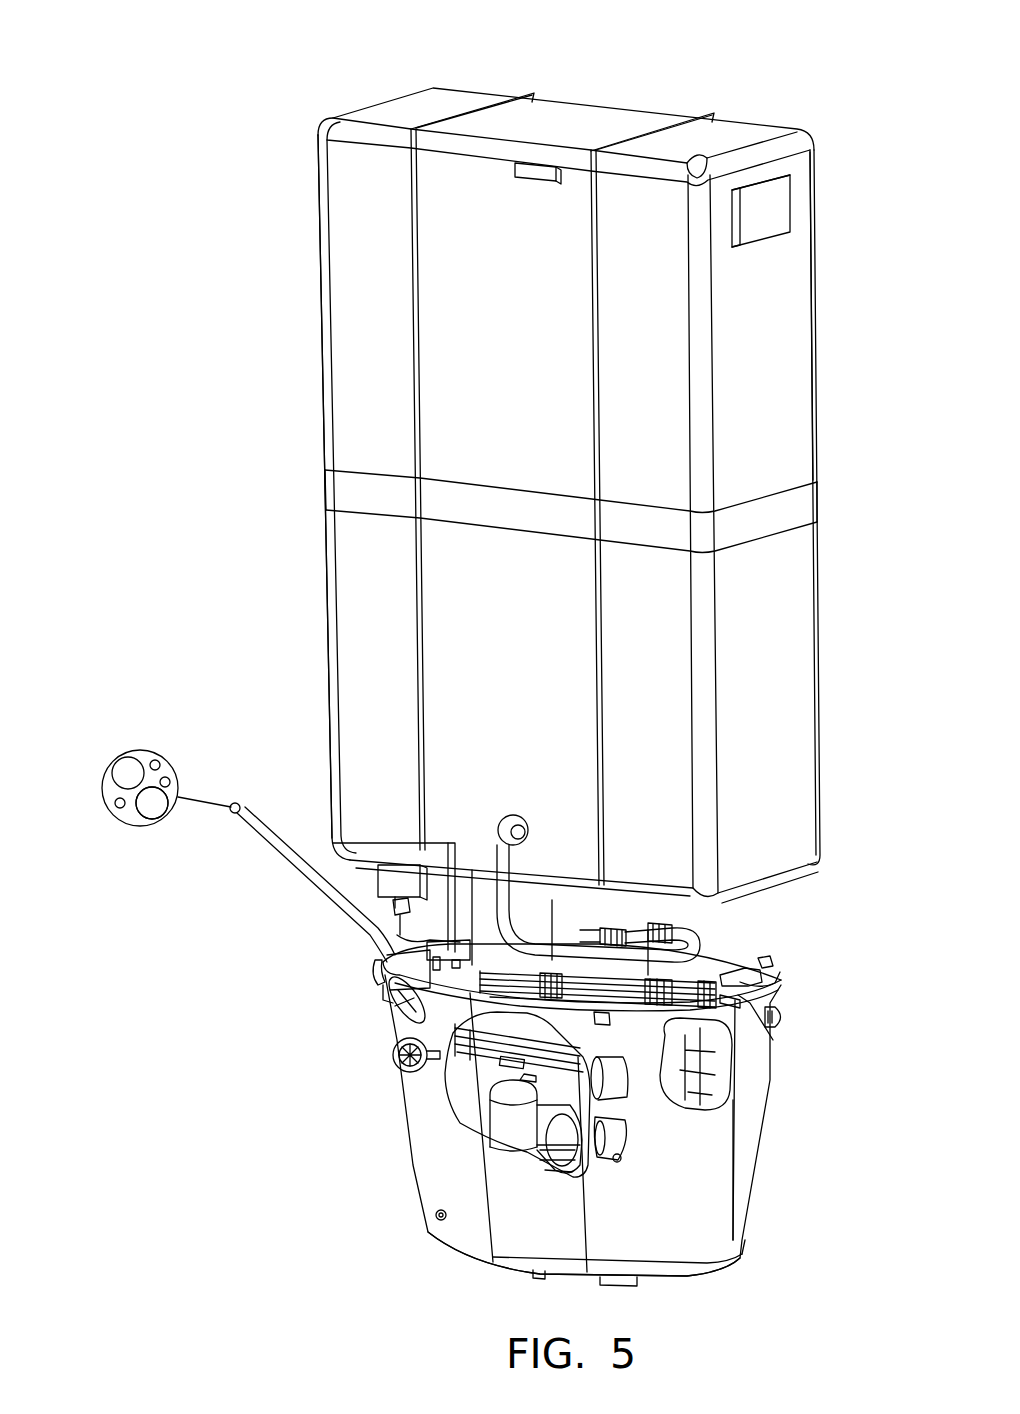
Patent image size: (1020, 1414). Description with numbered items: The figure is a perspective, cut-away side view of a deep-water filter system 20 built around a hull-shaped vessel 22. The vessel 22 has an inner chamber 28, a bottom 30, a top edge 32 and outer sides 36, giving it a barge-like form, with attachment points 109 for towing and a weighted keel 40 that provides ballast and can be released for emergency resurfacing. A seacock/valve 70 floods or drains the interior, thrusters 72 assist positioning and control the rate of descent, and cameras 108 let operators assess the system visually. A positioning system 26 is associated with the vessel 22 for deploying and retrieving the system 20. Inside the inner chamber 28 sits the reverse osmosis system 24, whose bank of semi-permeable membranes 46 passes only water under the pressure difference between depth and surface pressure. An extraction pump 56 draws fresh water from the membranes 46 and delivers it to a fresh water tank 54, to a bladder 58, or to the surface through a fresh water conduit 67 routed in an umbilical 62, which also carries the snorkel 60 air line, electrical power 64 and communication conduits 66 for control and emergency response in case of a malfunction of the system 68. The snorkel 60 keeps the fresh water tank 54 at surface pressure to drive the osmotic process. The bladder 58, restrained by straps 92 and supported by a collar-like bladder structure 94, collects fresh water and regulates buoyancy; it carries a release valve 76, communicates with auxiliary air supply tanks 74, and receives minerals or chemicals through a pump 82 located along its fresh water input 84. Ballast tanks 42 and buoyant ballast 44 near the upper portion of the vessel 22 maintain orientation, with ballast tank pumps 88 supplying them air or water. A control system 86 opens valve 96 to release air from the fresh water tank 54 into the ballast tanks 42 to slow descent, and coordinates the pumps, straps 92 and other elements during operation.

The filter system 20 is at (866, 539).
The vessel 22 is at (413, 1165).
The reverse osmosis system 24 is at (522, 453).
The positioning system 26 is at (793, 200).
The inner chamber 28 is at (453, 1081).
The bottom 30 is at (690, 1262).
The top edge 32 is at (823, 944).
The outer sides 36 is at (770, 1170).
The keel 40 is at (533, 1272).
The ballast tanks 42 is at (554, 1041).
The ballast 44 is at (383, 992).
The semi-permeable membranes 46 is at (692, 891).
The fresh water tank 54 is at (717, 1156).
The extraction pump 56 is at (465, 1160).
The bladder 58 is at (320, 265).
The snorkel 60 is at (128, 751).
The umbilical 62 is at (105, 778).
The electrical power 64 is at (113, 817).
The communication conduits 66 is at (162, 756).
The fresh water conduit 67 is at (150, 822).
The malfunction of the system 68 is at (726, 1065).
The seacock/valve 70 is at (405, 1228).
The thrusters 72 is at (392, 1052).
The auxiliary air supply tanks 74 is at (423, 1115).
The release valve 76 is at (515, 170).
The pump 82 is at (734, 886).
The fresh water input 84 is at (684, 933).
The control system 86 is at (804, 967).
The ballast tank pumps 88 is at (455, 845).
The straps 92 is at (413, 333).
The bladder structure 94 is at (325, 493).
The valve 96 is at (438, 1074).
The cameras 108 is at (393, 908).
The attachment points 109 is at (843, 1017).